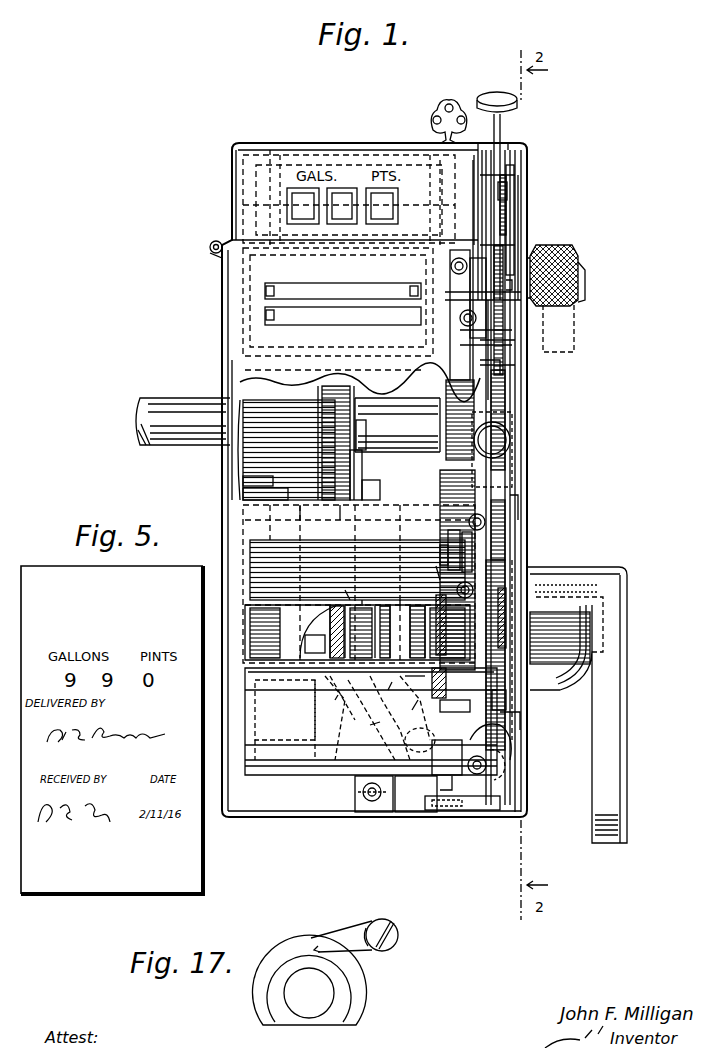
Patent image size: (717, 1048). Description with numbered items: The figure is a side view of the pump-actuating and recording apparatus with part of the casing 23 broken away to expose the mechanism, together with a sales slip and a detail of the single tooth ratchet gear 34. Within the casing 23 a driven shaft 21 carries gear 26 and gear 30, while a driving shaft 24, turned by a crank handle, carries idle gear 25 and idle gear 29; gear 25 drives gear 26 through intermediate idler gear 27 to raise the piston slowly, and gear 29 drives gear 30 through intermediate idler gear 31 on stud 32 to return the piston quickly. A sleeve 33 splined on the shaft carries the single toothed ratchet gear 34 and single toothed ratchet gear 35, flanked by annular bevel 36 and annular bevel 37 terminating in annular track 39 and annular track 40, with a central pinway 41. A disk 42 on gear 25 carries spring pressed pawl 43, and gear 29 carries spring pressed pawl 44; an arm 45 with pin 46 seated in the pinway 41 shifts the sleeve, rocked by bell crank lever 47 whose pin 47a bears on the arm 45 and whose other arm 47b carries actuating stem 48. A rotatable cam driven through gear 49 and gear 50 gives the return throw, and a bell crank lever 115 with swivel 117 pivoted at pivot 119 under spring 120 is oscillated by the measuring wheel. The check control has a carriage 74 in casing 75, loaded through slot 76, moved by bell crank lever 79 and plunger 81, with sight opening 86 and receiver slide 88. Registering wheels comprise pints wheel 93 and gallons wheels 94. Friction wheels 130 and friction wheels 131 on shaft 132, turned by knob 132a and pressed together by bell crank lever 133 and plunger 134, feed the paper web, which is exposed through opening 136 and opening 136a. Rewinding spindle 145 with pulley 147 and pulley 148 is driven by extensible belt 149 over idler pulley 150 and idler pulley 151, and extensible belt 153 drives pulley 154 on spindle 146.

In FIG. 1, the friction wheels 130 is at (412, 143).
In FIG. 1, the gallons registering wheels 94 is at (338, 198).
In FIG. 1, the pints registering wheel 93 is at (380, 198).
In FIG. 1, the plunger 81 is at (508, 102).
In FIG. 1, the slot 76 is at (521, 144).
In FIG. 1, the bell crank lever 115 is at (528, 172).
In FIG. 1, the casing 75 is at (498, 192).
In FIG. 1, the reciprocatory carriage 74 is at (512, 215).
In FIG. 1, the shaft 132 is at (476, 282).
In FIG. 1, the actuating stem 48 is at (500, 252).
In FIG. 1, the sight opening 86 is at (567, 260).
In FIG. 1, the knob 132a is at (590, 262).
In FIG. 1, the bell crank lever 79 is at (508, 272).
In FIG. 1, the opening 136 is at (268, 290).
In FIG. 1, the opening 136a is at (268, 316).
In FIG. 1, the friction wheels 131 is at (290, 329).
In FIG. 1, the bell crank lever 133 is at (336, 362).
In FIG. 1, the driven shaft 21 is at (174, 408).
In FIG. 1, the casing 23 is at (226, 372).
In FIG. 1, the gear 30 is at (245, 458).
In FIG. 1, the stud 32 is at (242, 481).
In FIG. 1, the intermediate idler gear 31 is at (248, 492).
In FIG. 1, the gear 49 is at (348, 398).
In FIG. 1, the spring 120 is at (350, 440).
In FIG. 1, the pivot 119 is at (360, 470).
In FIG. 1, the plunger 134 is at (512, 443).
In FIG. 1, the extensible belt 149 is at (525, 480).
In FIG. 1, the idler pulley 150 is at (512, 340).
In FIG. 1, the idler pulley 151 is at (512, 358).
In FIG. 1, the gear 26 is at (502, 384).
In FIG. 1, the intermediate idler gear 27 is at (520, 503).
In FIG. 1, the pulley 147 is at (456, 542).
In FIG. 1, the pulley 148 is at (472, 548).
In FIG. 1, the gear 25 is at (520, 580).
In FIG. 1, the annular track 40 is at (300, 590).
In FIG. 1, the gear 50 is at (328, 512).
In FIG. 1, the swivel 117 is at (358, 505).
In FIG. 1, the spindle 145 is at (440, 552).
In FIG. 1, the spring pressed pawl 43 is at (436, 566).
In FIG. 17, the spring pressed pawl 43 is at (358, 950).
In FIG. 1, the single toothed ratchet gear 35 is at (345, 590).
In FIG. 1, the annular bevel 37 is at (362, 600).
In FIG. 1, the pinway 41 is at (400, 600).
In FIG. 1, the gear 29 is at (280, 740).
In FIG. 1, the driving shaft 24 is at (305, 680).
In FIG. 17, the driving shaft 24 is at (295, 996).
In FIG. 1, the annular bevel 36 is at (528, 632).
In FIG. 1, the annular track 39 is at (594, 666).
In FIG. 1, the spring pressed pawl 44 is at (335, 700).
In FIG. 1, the bell crank lever 47 is at (360, 690).
In FIG. 1, the pin 47a is at (370, 725).
In FIG. 1, the pin 46 is at (388, 690).
In FIG. 1, the arm 45 is at (412, 710).
In FIG. 1, the sleeve 33 is at (414, 680).
In FIG. 1, the single toothed ratchet gear 34 is at (441, 683).
In FIG. 17, the single toothed ratchet gear 34 is at (318, 946).
In FIG. 1, the disk 42 is at (455, 715).
In FIG. 1, the extensible belt 153 is at (508, 698).
In FIG. 1, the pulley 154 is at (518, 720).
In FIG. 1, the spindle 146 is at (486, 712).
In FIG. 1, the arm 47b is at (498, 772).
In FIG. 1, the slide 88 is at (498, 808).